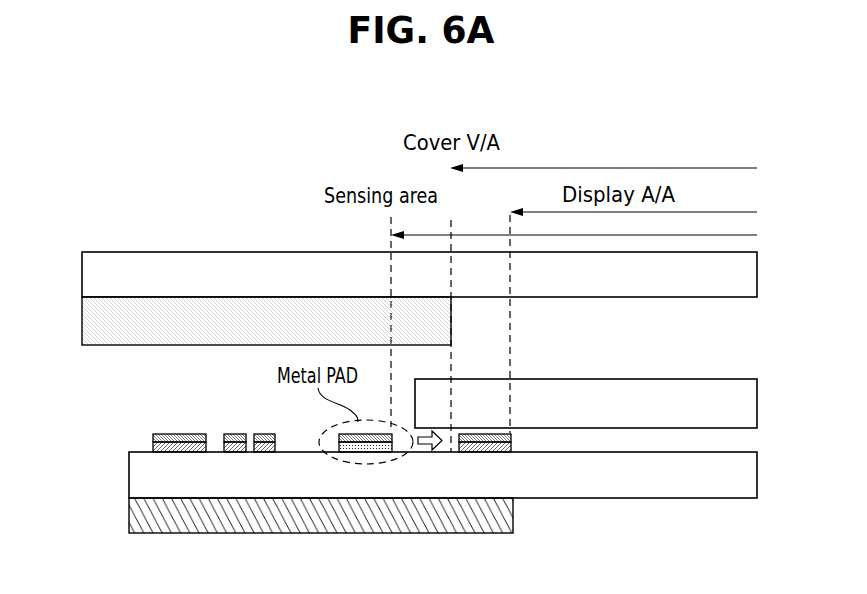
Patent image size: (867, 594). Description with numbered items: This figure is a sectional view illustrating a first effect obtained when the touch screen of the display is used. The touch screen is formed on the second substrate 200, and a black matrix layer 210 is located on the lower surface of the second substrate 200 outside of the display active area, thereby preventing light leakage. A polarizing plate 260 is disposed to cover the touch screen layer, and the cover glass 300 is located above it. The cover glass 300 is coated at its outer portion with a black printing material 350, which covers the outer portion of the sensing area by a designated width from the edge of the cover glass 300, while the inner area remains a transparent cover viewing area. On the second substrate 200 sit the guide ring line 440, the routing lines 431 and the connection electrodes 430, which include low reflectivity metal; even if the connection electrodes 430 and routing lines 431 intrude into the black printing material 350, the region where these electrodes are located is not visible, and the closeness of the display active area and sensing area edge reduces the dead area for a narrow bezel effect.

The cover glass 300 is at (747, 275).
The black printing material 350 is at (92, 322).
The polarizing plate 260 is at (747, 403).
The second substrate 200 is at (747, 475).
The black matrix layer 210 is at (140, 513).
The guide ring line 440 is at (153, 444).
The routing lines 431 is at (234, 433).
The connection electrodes 430 is at (520, 449).